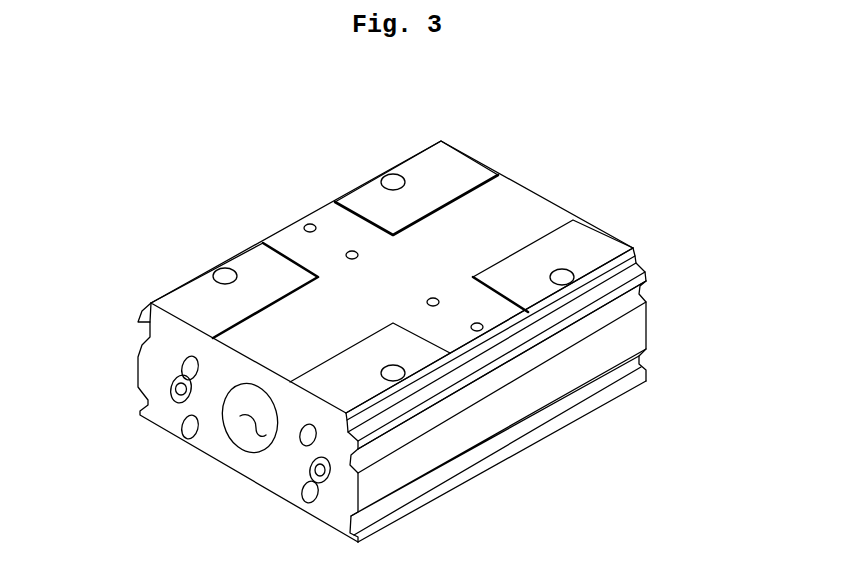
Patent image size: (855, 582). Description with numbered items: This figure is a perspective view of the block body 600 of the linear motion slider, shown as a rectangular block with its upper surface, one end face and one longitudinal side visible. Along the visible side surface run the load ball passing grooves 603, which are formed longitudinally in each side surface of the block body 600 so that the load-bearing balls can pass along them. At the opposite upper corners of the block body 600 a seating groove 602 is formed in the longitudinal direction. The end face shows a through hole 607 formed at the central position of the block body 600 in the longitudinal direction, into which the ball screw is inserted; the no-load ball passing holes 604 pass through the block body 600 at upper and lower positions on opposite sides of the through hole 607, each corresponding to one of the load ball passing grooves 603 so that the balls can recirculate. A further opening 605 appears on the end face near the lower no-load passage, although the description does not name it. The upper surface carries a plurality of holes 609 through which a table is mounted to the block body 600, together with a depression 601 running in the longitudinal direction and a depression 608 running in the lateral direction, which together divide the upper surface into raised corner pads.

The block body 600 is at (462, 72).
The depression 601 is at (526, 201).
The seating groove 602 is at (641, 280).
The load ball passing groove 603 is at (615, 327).
The no-load ball passing hole 604 is at (188, 368).
The hole 605 is at (323, 468).
The through hole 607 is at (243, 427).
The depression 608 is at (336, 213).
The hole 609 is at (226, 272).